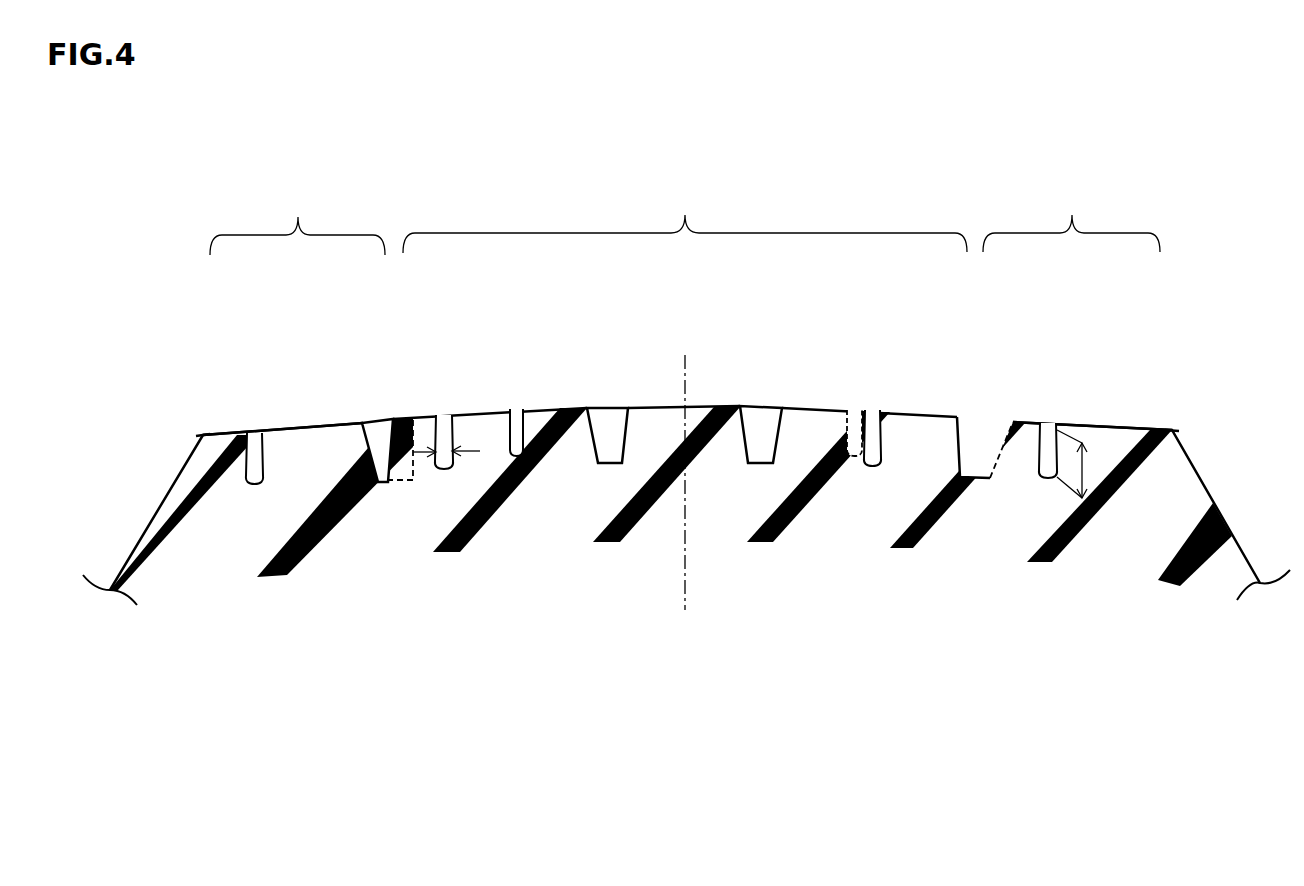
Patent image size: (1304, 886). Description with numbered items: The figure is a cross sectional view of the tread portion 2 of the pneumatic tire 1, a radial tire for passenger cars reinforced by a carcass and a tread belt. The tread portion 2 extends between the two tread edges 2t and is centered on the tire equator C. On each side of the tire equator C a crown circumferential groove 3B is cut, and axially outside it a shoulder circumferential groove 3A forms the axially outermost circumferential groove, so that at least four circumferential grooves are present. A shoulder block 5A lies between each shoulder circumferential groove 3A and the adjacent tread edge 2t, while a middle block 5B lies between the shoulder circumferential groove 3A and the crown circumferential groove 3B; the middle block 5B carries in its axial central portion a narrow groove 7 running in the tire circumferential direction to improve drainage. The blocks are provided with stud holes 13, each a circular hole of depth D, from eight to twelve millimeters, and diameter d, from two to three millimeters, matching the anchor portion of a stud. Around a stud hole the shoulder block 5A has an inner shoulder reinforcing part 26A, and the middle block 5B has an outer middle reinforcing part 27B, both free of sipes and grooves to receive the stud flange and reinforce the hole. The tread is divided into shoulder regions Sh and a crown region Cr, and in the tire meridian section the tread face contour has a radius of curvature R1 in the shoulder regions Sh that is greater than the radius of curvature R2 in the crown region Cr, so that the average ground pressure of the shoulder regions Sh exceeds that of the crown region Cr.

The pneumatic tire 1 is at (1173, 287).
The tread portion 2 is at (1173, 367).
The tread edges 2t is at (200, 432).
The shoulder circumferential groove 3A is at (373, 437).
The crown circumferential groove 3B is at (612, 433).
The shoulder block 5A is at (313, 427).
The middle block 5B is at (562, 402).
The narrow groove 7 is at (520, 432).
The stud hole 13 is at (250, 437).
The inner shoulder reinforcing part 26A is at (1003, 428).
The outer middle reinforcing part 27B is at (394, 423).
The shoulder region Sh is at (685, 220).
The crown region Cr is at (685, 220).
The tire equator C is at (685, 471).
The diameter of stud hole d is at (435, 472).
The depth of stud hole D is at (1083, 463).
The radius of curvature of shoulder regions R1 is at (293, 430).
The radius of curvature of crown region R2 is at (495, 420).